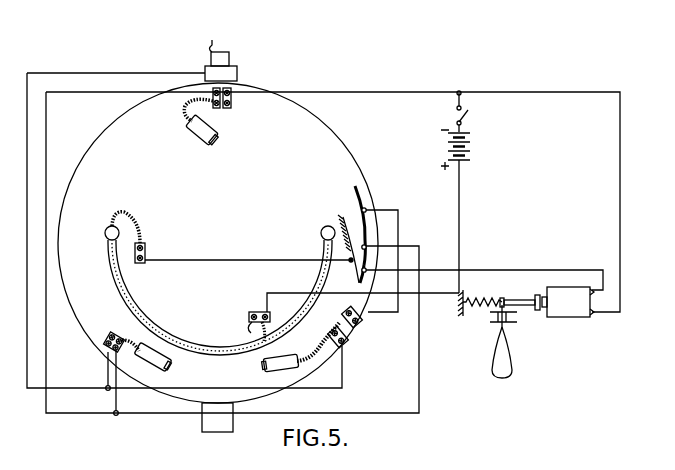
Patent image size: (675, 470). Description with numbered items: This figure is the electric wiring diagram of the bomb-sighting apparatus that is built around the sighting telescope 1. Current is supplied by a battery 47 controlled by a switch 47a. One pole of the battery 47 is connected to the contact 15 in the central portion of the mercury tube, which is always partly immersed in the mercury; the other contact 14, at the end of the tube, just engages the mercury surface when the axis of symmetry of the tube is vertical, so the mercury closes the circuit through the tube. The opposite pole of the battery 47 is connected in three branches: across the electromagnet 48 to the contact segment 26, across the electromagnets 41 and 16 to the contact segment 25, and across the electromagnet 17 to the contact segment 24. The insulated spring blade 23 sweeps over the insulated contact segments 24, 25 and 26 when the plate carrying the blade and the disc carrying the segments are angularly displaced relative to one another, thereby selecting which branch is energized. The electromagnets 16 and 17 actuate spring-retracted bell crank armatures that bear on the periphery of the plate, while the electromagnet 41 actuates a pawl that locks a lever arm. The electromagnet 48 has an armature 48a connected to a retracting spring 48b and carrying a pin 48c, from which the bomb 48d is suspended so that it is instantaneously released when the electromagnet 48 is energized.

The sighting telescope 1 is at (211, 40).
The contact 14 is at (147, 246).
The contact 15 is at (250, 328).
The electromagnet 16 is at (156, 363).
The electromagnet 17 is at (313, 362).
The insulated spring blade 23 is at (354, 264).
The contact segment 24 is at (366, 209).
The contact segment 25 is at (366, 246).
The contact segment 26 is at (366, 269).
The electromagnet 41 is at (216, 129).
The battery 47 is at (474, 148).
The switch 47a is at (469, 113).
The electromagnet 48 is at (560, 310).
The armature 48a is at (536, 294).
The retracting spring 48b is at (481, 300).
The pin 48c is at (516, 299).
The bomb 48d is at (512, 346).